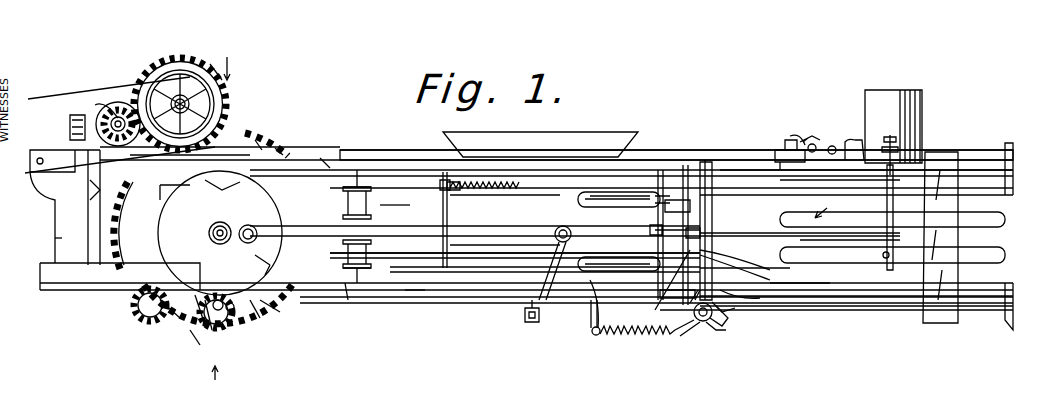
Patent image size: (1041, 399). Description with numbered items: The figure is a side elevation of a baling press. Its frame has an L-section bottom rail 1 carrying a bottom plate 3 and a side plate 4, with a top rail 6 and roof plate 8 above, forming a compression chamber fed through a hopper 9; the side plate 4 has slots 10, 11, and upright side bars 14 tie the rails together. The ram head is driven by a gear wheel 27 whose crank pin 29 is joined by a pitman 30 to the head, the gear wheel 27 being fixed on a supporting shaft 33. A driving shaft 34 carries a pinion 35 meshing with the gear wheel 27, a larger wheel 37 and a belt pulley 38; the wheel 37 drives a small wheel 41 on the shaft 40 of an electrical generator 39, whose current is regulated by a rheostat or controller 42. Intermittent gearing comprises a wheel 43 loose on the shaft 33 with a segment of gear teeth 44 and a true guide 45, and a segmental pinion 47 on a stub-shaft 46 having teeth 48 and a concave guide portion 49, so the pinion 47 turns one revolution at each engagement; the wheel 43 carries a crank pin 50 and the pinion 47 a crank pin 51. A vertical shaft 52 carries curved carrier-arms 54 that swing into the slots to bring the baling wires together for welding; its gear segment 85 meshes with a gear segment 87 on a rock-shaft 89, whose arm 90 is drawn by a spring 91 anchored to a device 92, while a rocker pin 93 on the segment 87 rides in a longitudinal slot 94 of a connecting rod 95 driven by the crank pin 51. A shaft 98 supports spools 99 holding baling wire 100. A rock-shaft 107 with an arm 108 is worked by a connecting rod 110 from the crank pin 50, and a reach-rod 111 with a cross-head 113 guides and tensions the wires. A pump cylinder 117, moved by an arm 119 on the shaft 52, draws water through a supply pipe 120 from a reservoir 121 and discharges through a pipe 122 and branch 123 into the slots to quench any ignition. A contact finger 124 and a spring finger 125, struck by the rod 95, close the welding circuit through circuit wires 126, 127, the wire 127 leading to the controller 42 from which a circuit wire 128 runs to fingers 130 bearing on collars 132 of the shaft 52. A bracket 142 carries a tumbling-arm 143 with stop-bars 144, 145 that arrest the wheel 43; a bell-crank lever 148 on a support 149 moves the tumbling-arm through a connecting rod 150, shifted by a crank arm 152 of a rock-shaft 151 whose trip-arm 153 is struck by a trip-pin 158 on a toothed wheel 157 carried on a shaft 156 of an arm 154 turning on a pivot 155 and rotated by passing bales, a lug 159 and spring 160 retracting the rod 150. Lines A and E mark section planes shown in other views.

The bottom rail 1 is at (850, 305).
The bottom plate 3 is at (878, 310).
The side plate 4 is at (440, 253).
The top rail 6 is at (1002, 195).
The roof plate 8 is at (735, 160).
The hopper 9 is at (543, 132).
The slot 10 is at (590, 258).
The slot 11 is at (578, 202).
The upright side bar 14 is at (90, 196).
The gear wheel 27 is at (276, 318).
The crank pin 29 is at (130, 240).
The pitman 30 is at (412, 212).
The supporting shaft 33 is at (222, 245).
The driving shaft 34 is at (187, 62).
The pinion 35 is at (172, 78).
The larger wheel 37 is at (200, 62).
The pulley 38 is at (140, 102).
The electrical generator 39 is at (118, 108).
The generator shaft 40 is at (95, 105).
The small wheel 41 is at (80, 95).
The rheostat or controller 42 is at (70, 125).
The intermittent-motion wheel 43 is at (272, 308).
The gear teeth 44 is at (208, 236).
The guide 45 is at (270, 250).
The stub-shaft 46 is at (224, 330).
The segmental pinion 47 is at (210, 330).
The gear teeth 48 is at (198, 330).
The concave guide portion 49 is at (192, 340).
The crank pin 50 is at (272, 266).
The crank pin 51 is at (258, 322).
The carrier shaft 52 is at (712, 228).
The carrier-arm 54 is at (590, 280).
The gear segment 85 is at (742, 300).
The gear segment 87 is at (730, 310).
The rock-shaft 89 is at (704, 322).
The arm 90 is at (694, 320).
The spring 91 is at (640, 336).
The spring anchor device 92 is at (595, 335).
The rocker pin 93 is at (726, 320).
The longitudinal slot 94 is at (718, 330).
The connecting rod 95 is at (415, 303).
The spool shaft 98 is at (348, 302).
The spool 99 is at (378, 338).
The baling wire 100 is at (458, 325).
The rock-shaft 107 is at (531, 323).
The arm 108 is at (528, 290).
The connecting rod 110 is at (505, 249).
The reach-rod 111 is at (612, 213).
The cross-head 113 is at (655, 216).
The pump cylinder 117 is at (735, 252).
The arm 119 is at (790, 268).
The supply pipe 120 is at (858, 243).
The reservoir 121 is at (880, 90).
The discharge pipe 122 is at (617, 250).
The branch pipe 123 is at (652, 288).
The contact finger 124 is at (150, 316).
The spring finger 125 is at (190, 316).
The circuit wire 126 is at (55, 239).
The circuit wire 127 is at (212, 240).
The circuit wire 128 is at (373, 150).
The finger 130 is at (703, 160).
The collar 132 is at (712, 213).
The bracket 142 is at (234, 130).
The tumbling-arm 143 is at (178, 160).
The stop-bar 144 is at (224, 192).
The stop-bar 145 is at (170, 186).
The bell-crank lever 148 is at (282, 144).
The support 149 is at (262, 138).
The connecting rod 150 is at (325, 155).
The rock-shaft 151 is at (785, 142).
The crank arm 152 is at (785, 170).
The trip-arm 153 is at (808, 144).
The arm 154 is at (852, 143).
The pivot 155 is at (840, 184).
The shaft 156 is at (822, 138).
The toothed wheel 157 is at (790, 136).
The trip-pin 158 is at (835, 146).
The lug 159 is at (440, 184).
The spring 160 is at (461, 202).
The section line A- A is at (764, 229).
The section line E- E is at (221, 217).